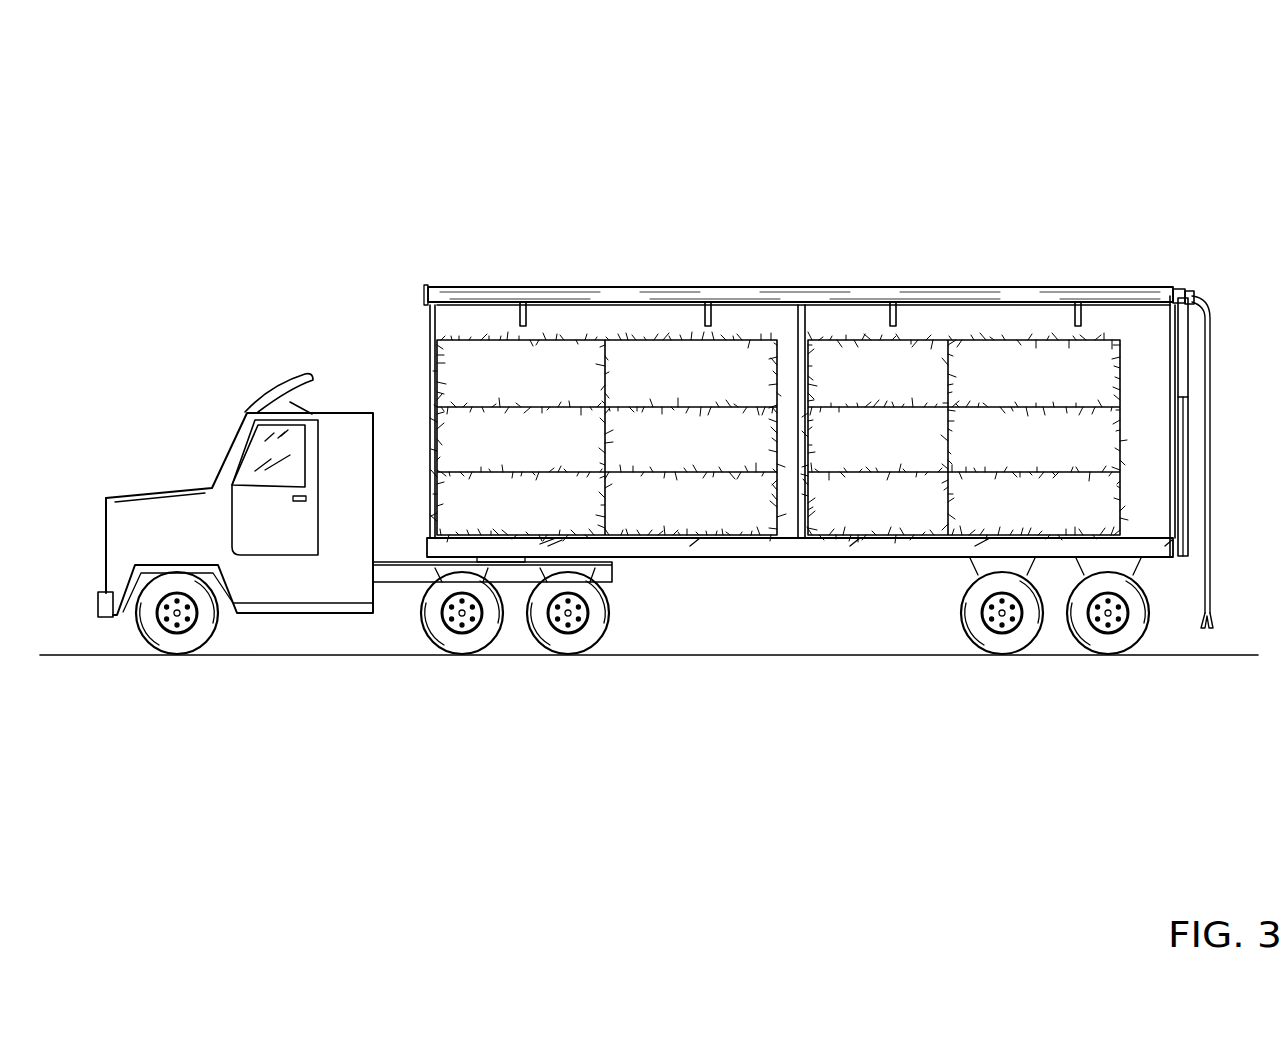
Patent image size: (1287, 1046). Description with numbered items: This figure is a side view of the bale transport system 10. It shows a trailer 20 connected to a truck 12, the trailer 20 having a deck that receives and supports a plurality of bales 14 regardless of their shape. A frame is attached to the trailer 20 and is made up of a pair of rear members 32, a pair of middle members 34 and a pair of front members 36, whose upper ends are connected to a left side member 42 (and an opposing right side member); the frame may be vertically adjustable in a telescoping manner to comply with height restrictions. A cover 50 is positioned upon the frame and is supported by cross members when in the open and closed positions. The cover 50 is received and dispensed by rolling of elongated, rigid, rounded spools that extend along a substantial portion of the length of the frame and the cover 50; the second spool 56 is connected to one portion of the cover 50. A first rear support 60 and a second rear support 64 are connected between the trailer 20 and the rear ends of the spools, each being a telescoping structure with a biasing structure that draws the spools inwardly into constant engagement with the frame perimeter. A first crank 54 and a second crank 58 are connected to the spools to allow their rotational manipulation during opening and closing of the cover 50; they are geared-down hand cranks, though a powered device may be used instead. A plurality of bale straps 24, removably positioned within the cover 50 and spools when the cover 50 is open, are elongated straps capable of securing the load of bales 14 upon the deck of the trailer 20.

The bale transport system 10 is at (1012, 158).
The truck 12 is at (170, 508).
The bales 14 is at (977, 520).
The trailer 20 is at (647, 560).
The bale straps 24 is at (523, 294).
The rear members 32 is at (1172, 365).
The middle members 34 is at (797, 538).
The front members 36 is at (432, 333).
The left side member 42 is at (625, 305).
The cover 50 is at (848, 292).
The first crank 54 is at (1204, 614).
The second spool 56 is at (1178, 289).
The second crank 58 is at (1210, 596).
The first rear support 60 is at (1182, 510).
The second rear support 64 is at (1188, 443).